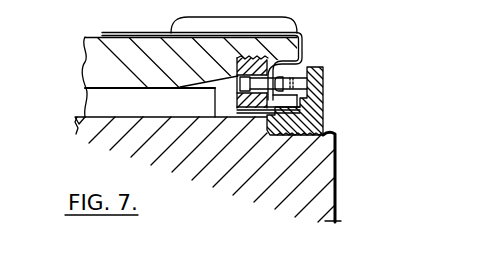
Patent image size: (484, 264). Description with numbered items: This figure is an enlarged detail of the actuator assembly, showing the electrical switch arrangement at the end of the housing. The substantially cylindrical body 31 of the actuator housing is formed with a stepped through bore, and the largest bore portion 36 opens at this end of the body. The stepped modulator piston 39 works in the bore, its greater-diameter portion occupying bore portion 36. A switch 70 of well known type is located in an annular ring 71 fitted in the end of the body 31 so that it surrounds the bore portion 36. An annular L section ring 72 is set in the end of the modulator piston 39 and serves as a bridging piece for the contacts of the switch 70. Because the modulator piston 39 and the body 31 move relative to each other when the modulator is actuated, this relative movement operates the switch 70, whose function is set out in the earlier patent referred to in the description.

The cylindrical body 31 is at (107, 58).
The bore portion 36 is at (123, 88).
The modulator piston 39 is at (338, 163).
The switch 70 is at (298, 82).
The annular ring 71 is at (296, 37).
The annular L section ring 72 is at (313, 98).